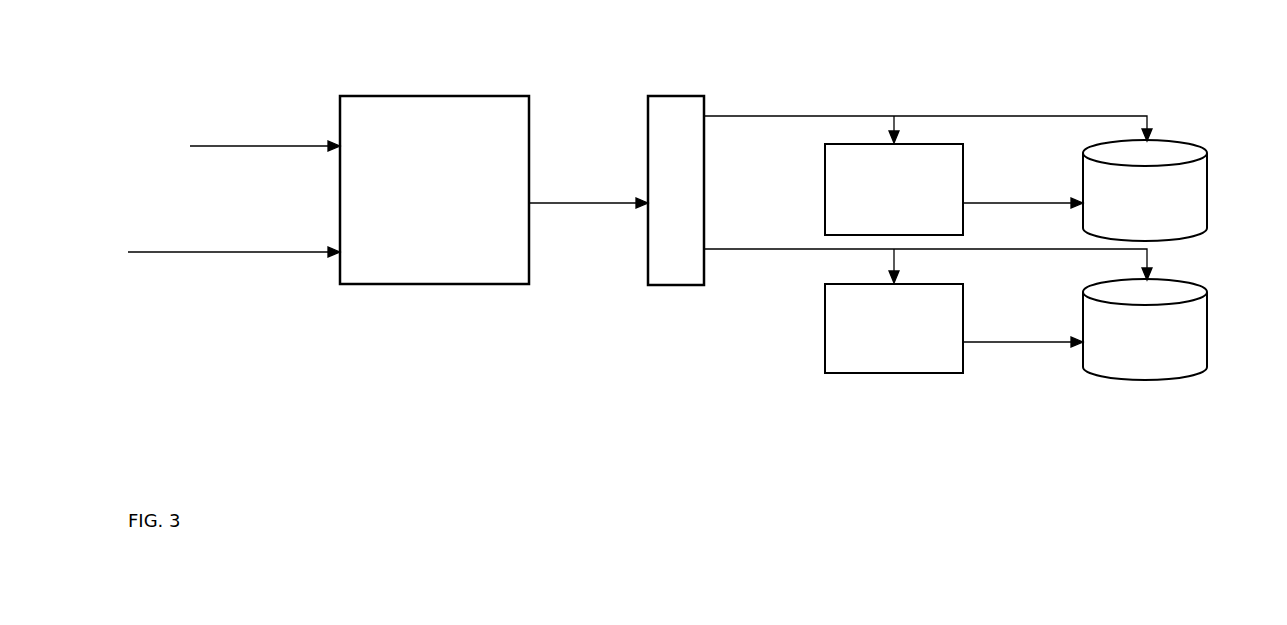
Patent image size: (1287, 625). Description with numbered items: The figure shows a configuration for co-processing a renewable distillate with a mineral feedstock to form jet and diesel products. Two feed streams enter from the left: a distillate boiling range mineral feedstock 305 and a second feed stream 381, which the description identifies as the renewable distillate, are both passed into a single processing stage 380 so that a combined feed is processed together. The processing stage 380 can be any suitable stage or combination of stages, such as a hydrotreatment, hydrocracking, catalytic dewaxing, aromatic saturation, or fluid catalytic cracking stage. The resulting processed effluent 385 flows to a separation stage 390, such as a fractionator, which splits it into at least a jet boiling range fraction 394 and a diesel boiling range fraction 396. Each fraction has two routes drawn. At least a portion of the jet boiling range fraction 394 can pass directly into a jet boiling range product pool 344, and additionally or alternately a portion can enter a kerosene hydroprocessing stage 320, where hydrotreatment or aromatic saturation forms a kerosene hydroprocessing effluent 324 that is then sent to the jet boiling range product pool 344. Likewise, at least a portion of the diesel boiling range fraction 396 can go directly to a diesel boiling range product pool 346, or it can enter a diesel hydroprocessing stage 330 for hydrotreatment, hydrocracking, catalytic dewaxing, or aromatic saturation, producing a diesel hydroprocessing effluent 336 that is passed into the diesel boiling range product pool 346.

The distillate feedstock 305 is at (253, 126).
The input signal 381 is at (219, 260).
The processing stage 380 is at (416, 192).
The processed effluent 385 is at (579, 219).
The separation stage 390 is at (668, 297).
The jet boiling range fraction 394 is at (779, 101).
The diesel boiling range fraction 396 is at (771, 258).
The kerosene hydroprocessing stage 320 is at (876, 194).
The diesel hydroprocessing stage 330 is at (876, 333).
The kerosene hydroprocessing effluent 324 is at (1044, 189).
The diesel hydroprocessing effluent 336 is at (1032, 355).
The jet boiling range product pool 344 is at (1127, 202).
The diesel boiling range product pool 346 is at (1127, 342).